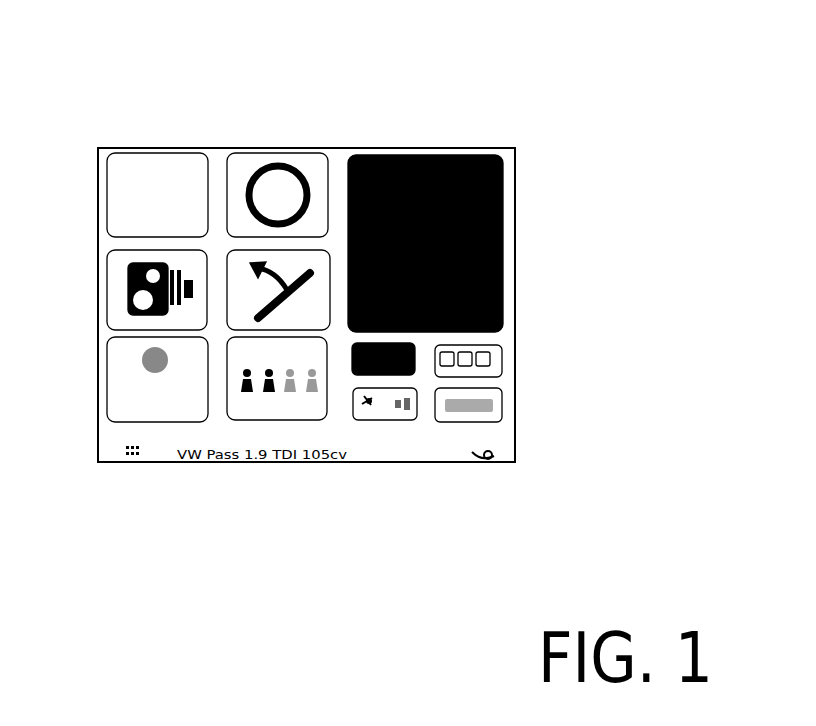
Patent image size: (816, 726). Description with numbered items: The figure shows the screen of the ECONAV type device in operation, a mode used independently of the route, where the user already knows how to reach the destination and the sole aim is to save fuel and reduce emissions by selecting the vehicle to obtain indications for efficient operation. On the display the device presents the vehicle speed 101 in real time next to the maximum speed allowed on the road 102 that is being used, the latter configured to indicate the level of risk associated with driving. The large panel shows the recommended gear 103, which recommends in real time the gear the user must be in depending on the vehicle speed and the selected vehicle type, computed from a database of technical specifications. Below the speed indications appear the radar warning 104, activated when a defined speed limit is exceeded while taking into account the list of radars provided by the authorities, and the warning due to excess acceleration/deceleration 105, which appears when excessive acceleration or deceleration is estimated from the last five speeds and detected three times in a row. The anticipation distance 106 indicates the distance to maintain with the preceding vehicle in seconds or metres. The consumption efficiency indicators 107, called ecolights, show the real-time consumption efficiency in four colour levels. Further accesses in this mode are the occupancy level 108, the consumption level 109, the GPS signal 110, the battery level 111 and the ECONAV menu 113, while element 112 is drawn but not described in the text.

The vehicle speed 101 is at (199, 162).
The maximum speed allowed on the road 102 is at (305, 161).
The recommended gear 103 is at (488, 161).
The radar warning 104 is at (122, 255).
The warning due to excess acceleration/deceleration 105 is at (240, 257).
The anticipation distance 106 is at (186, 345).
The consumption efficiency indicators 107 is at (360, 357).
The occupancy level 108 is at (242, 411).
The consumption level 109 is at (499, 346).
The GPS signal 110 is at (388, 417).
The battery level 111 is at (499, 415).
The settings icon 112 is at (499, 461).
The ECONAV menu 113 is at (120, 455).